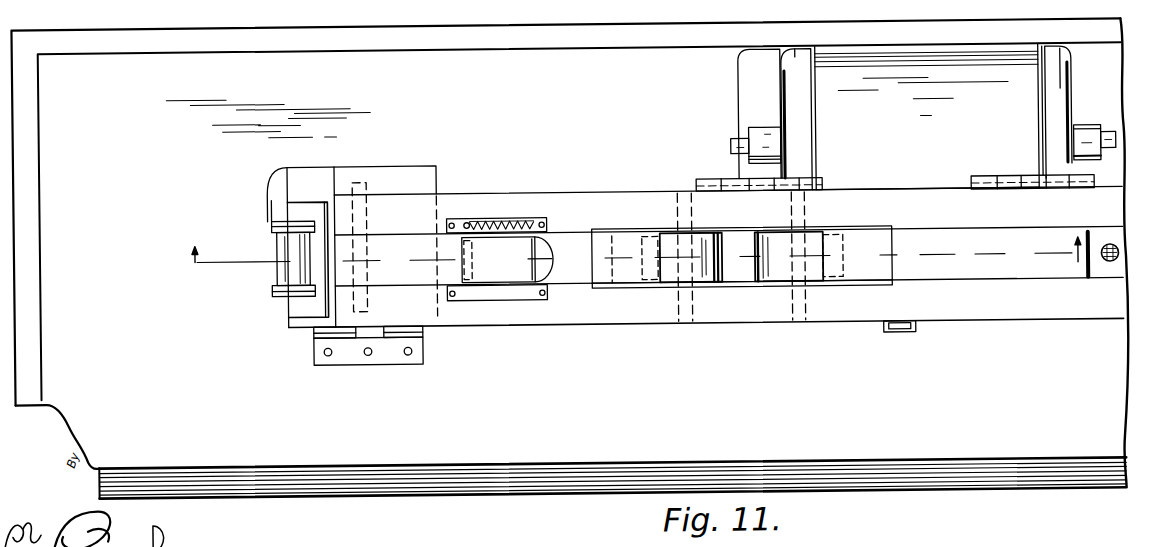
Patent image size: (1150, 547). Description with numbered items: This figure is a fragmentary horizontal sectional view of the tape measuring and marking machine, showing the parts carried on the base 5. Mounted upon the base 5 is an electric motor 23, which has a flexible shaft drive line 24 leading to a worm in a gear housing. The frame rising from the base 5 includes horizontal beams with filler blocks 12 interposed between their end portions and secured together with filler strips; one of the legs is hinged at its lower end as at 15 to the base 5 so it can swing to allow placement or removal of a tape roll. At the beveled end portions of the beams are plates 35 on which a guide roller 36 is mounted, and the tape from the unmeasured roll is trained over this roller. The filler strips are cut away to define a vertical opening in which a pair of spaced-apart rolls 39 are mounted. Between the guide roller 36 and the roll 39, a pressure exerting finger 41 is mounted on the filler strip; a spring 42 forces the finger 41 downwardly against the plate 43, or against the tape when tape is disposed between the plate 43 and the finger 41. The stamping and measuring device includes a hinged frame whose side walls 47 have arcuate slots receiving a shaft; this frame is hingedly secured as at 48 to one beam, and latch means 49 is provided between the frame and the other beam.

The base 5 is at (648, 445).
The filler blocks 12 is at (347, 308).
The hinge 15 is at (388, 351).
The electric motor 23 is at (802, 94).
The flexible shaft drive line 24 is at (1112, 140).
The plates 35 is at (297, 303).
The guide roller 36 is at (277, 267).
The rolls 39 is at (772, 282).
The pressure exerting finger 41 is at (513, 268).
The spring 42 is at (500, 216).
The plate 43 is at (458, 214).
The side walls 47 is at (631, 199).
The hinge 48 is at (710, 178).
The latch means 49 is at (902, 334).